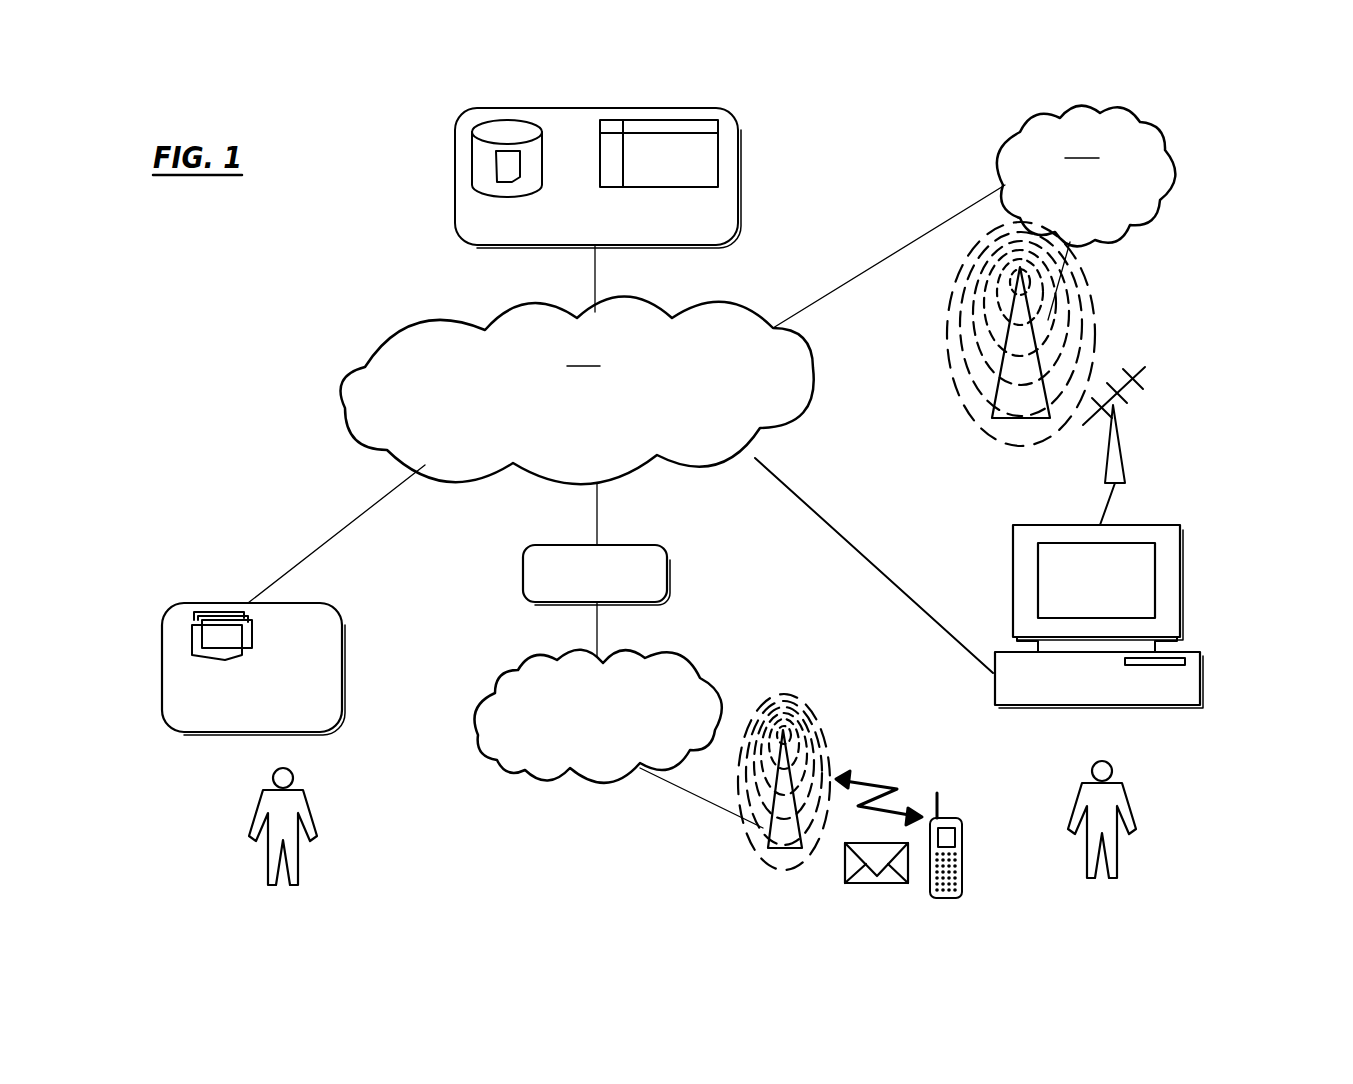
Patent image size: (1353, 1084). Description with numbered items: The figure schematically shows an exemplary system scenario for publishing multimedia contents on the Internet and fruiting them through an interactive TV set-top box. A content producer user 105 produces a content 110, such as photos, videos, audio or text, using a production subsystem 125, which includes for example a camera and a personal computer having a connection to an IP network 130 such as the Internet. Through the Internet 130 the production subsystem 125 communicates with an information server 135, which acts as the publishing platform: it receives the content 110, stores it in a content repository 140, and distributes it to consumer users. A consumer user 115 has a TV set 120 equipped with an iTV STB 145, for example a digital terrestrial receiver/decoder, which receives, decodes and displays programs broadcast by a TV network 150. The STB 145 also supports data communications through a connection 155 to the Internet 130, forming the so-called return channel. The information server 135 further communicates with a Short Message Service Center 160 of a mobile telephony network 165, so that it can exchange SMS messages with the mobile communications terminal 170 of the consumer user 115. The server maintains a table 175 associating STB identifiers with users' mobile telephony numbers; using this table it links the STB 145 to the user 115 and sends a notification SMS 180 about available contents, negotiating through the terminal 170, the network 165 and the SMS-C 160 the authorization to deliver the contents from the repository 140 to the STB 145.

The content producer user 105 is at (315, 822).
The content 110 is at (220, 615).
The consumer user 115 is at (1123, 810).
The TV set 120 is at (1180, 590).
The production subsystem 125 is at (262, 732).
The IP network 130 is at (577, 391).
The information server 135 is at (458, 227).
The content repository 140 is at (457, 160).
The STB 145 is at (1200, 673).
The TV network 150 is at (1086, 176).
The connection 155 is at (840, 542).
The Short Message Service Center 160 is at (667, 567).
The mobile telephony network 165 is at (548, 773).
The mobile communications terminal 170 is at (962, 855).
The table 175 is at (718, 166).
The notification SMS 180 is at (845, 878).